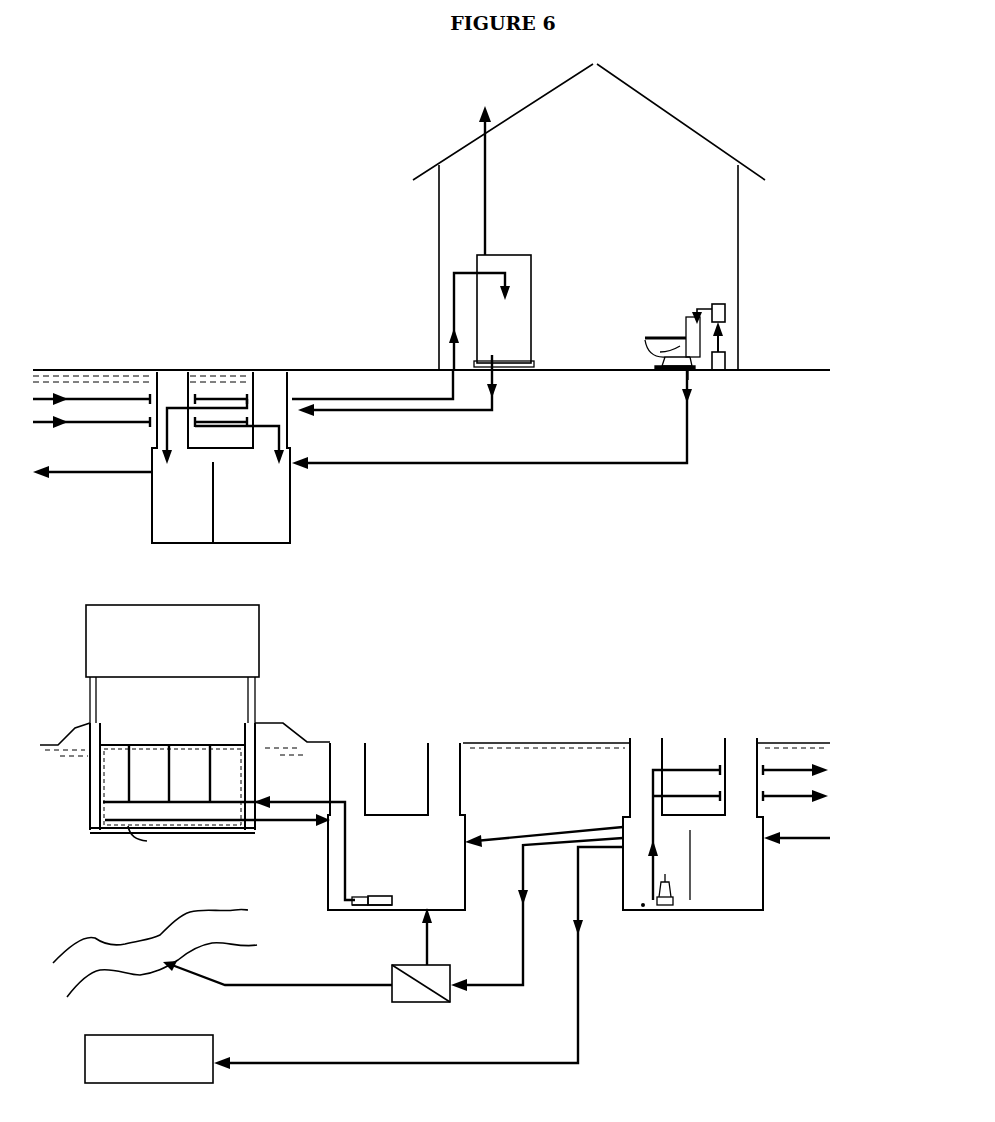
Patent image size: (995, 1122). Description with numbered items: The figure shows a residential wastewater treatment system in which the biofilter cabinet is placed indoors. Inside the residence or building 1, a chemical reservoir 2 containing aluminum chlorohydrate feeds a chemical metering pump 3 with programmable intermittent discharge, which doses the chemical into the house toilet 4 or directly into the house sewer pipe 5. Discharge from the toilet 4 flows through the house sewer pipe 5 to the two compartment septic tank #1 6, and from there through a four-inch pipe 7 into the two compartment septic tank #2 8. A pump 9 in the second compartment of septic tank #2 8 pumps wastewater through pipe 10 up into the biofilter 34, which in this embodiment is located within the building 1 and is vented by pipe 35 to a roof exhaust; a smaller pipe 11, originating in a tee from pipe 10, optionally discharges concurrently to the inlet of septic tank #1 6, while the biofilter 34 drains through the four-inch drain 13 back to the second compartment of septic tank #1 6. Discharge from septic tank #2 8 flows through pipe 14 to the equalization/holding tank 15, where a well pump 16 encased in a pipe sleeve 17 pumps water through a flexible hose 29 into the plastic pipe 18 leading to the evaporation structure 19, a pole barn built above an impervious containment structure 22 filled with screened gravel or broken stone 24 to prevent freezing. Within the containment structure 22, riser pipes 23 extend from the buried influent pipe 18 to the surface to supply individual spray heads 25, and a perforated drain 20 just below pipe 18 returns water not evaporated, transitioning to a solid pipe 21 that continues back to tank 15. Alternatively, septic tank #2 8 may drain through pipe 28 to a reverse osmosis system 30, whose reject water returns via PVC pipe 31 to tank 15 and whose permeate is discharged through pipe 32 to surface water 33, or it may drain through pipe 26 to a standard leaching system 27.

The residence or building 1 is at (589, 217).
The chemical reservoir 2 is at (726, 356).
The chemical metering pump 3 is at (726, 310).
The house toilet 4 is at (642, 340).
The house sewer pipe 5 is at (689, 464).
The two compartment septic tank #1 6 is at (292, 528).
The 4-inch pipe 7 is at (96, 480).
The two compartment septic tank #2 8 is at (764, 890).
The pump 9 is at (668, 906).
The pipe 10 is at (472, 270).
The pipe 11 is at (105, 427).
The 4-inch drain 13 is at (494, 411).
The 4-inch pipe 14 is at (544, 833).
The equalization/holding tank 15 is at (465, 890).
The well pump 16 is at (380, 906).
The pipe sleeve 17 is at (357, 906).
The plastic pipe 18 is at (287, 804).
The evaporation structure 19 is at (257, 690).
The perforated drain 20 is at (149, 839).
The solid pipe 21 is at (290, 832).
The containment structure 22 is at (90, 776).
The riser pipes 23 is at (131, 760).
The screened gravel or broken stone 24 is at (100, 810).
The spray heads 25 is at (129, 745).
The 4-inch pipe 26 is at (580, 860).
The standard leaching system 27 is at (149, 1059).
The 4-inch pipe 28 is at (521, 860).
The flexible hose 29 is at (346, 845).
The reverse osmosis system 30 is at (452, 1000).
The PVC pipe 31 is at (429, 925).
The pipe 32 is at (308, 990).
The surface water 33 is at (155, 953).
The biofilter 34 is at (532, 262).
The vent pipe 35 is at (487, 219).